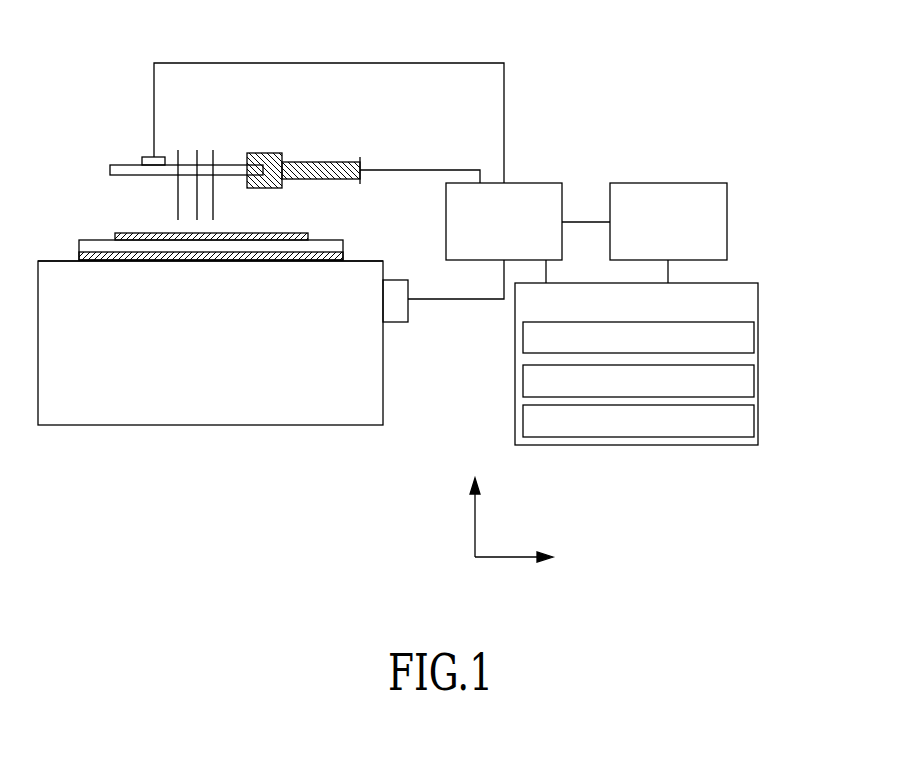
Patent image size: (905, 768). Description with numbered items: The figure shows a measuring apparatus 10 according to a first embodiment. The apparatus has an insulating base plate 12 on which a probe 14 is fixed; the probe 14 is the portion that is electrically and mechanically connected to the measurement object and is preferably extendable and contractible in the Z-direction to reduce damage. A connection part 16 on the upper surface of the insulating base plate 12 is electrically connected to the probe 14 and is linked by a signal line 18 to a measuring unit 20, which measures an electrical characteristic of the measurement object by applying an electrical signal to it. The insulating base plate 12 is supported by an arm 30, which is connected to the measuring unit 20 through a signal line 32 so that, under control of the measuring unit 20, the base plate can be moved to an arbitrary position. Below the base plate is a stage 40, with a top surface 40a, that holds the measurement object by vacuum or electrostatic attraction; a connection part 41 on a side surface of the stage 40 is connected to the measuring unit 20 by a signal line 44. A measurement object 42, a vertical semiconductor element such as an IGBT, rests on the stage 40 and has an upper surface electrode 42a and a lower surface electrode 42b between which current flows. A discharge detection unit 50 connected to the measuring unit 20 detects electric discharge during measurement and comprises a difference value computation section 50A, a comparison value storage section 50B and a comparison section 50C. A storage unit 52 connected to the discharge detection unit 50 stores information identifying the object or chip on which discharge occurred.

The measuring apparatus 10 is at (86, 36).
The insulating base plate 12 is at (110, 170).
The probe 14 is at (215, 157).
The connection part 16 is at (145, 161).
The signal line 18 is at (328, 63).
The measuring unit 20 is at (544, 183).
The arm 30 is at (315, 160).
The signal line 32 is at (412, 168).
The stage 40 is at (213, 425).
The stage top surface 40a is at (60, 261).
The connection part 41 is at (395, 315).
The measurement object 42 is at (345, 247).
The upper surface electrode 42a is at (306, 238).
The lower surface electrode 42b is at (344, 258).
The signal line 44 is at (457, 300).
The discharge detection unit 50 is at (760, 298).
The difference value computation section 50A is at (754, 337).
The comparison value storage section 50B is at (754, 380).
The comparison section 50C is at (754, 422).
The storage unit 52 is at (701, 183).